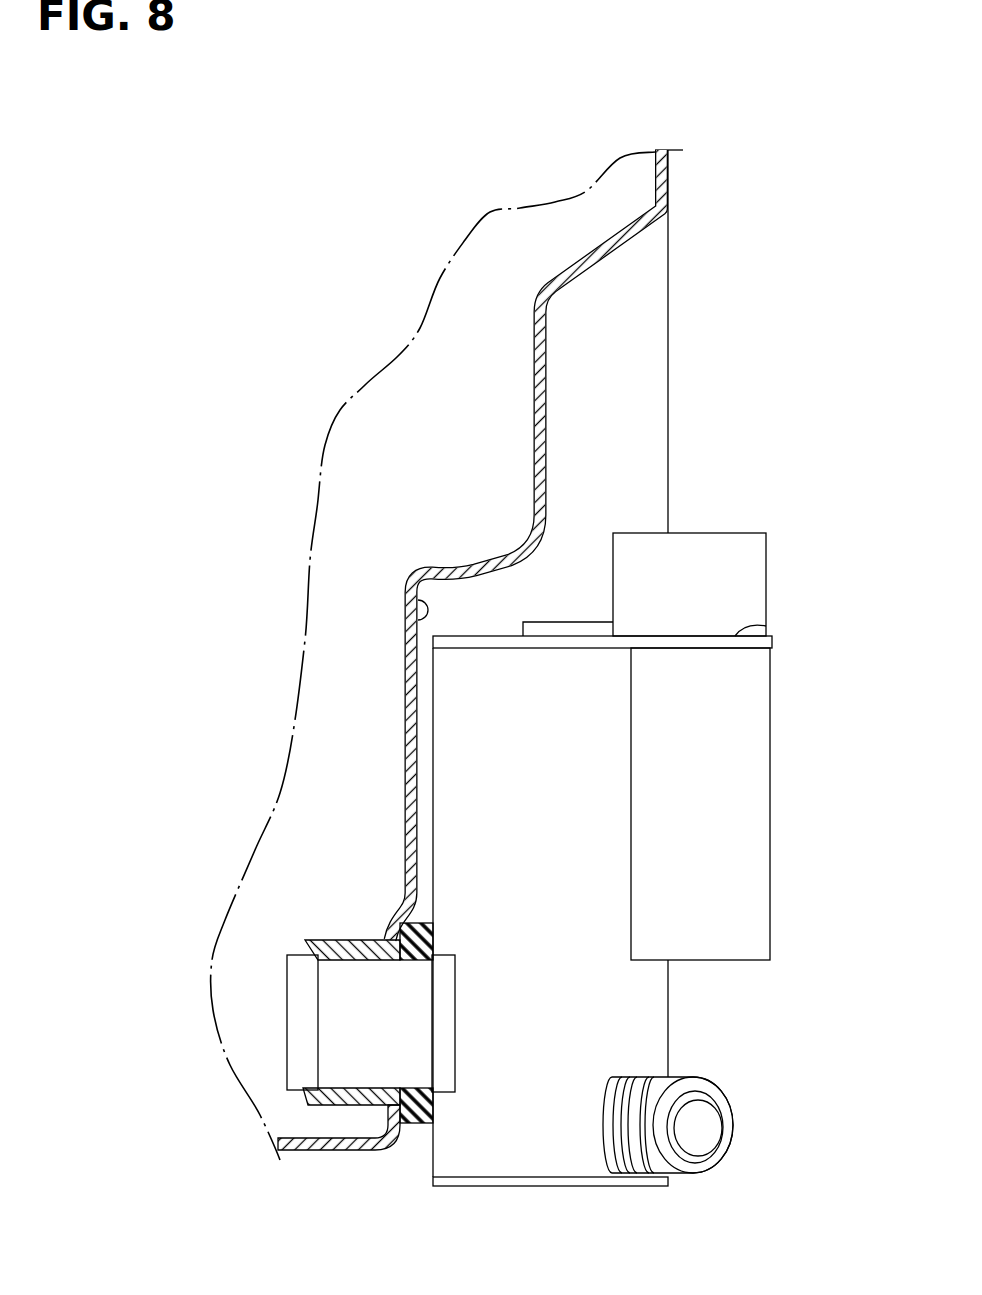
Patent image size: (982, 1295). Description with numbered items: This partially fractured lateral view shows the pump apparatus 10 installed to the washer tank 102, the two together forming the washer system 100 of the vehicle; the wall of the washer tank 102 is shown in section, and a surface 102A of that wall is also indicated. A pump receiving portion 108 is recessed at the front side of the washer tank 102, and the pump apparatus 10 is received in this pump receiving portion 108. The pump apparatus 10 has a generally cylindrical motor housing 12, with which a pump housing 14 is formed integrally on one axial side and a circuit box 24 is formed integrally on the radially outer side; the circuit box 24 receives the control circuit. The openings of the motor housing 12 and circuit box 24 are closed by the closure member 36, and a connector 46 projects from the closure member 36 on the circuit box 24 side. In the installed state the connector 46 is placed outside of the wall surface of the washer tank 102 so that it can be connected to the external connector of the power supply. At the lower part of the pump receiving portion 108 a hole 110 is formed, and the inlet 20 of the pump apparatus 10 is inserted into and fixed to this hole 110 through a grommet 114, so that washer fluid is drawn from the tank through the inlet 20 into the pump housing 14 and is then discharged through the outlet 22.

The washer system 100 is at (394, 192).
The washer tank 102 is at (676, 449).
The panel surface 102A is at (668, 388).
The pump receiving portion 108 is at (405, 600).
The motor housing 12 is at (430, 782).
The hole 110 is at (372, 940).
The inlet 20 is at (355, 1088).
The grommet 114 is at (317, 1107).
The pump apparatus 10 is at (686, 1003).
The circuit box 24 is at (770, 805).
The connector 46 is at (766, 577).
The closure member 36 is at (738, 632).
The pump housing 14 is at (432, 1165).
The outlet 22 is at (732, 1118).